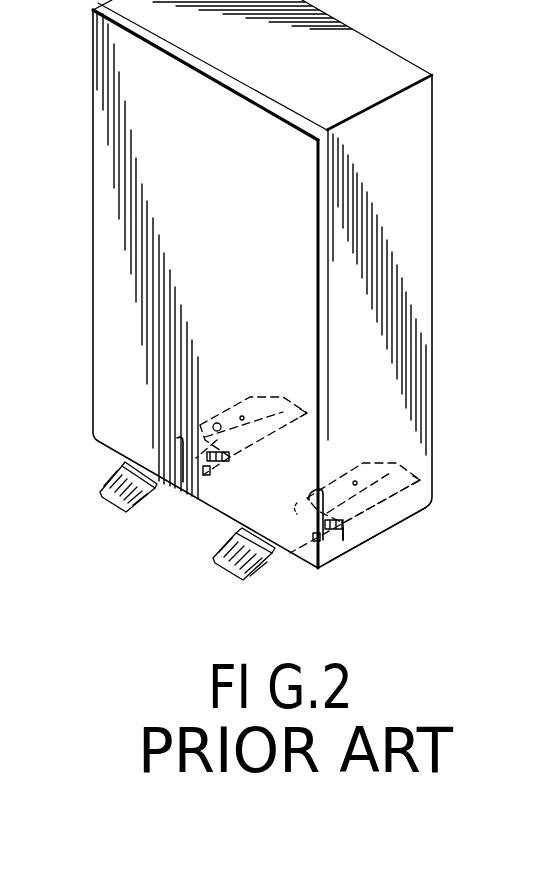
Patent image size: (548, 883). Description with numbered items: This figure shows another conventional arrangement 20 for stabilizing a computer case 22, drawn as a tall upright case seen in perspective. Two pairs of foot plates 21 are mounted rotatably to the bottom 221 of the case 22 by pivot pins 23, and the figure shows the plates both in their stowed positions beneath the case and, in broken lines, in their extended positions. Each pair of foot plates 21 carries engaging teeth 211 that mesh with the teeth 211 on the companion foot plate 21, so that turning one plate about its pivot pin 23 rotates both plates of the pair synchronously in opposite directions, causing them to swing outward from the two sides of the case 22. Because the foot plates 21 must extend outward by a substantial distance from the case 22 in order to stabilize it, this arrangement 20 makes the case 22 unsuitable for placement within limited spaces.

The arrangement 20 is at (261, 323).
The computer case 22 is at (108, 403).
The bottom 221 is at (380, 537).
The foot plate 21 is at (110, 497).
The pivot pin 23 is at (217, 423).
The engaging teeth 211 is at (343, 532).